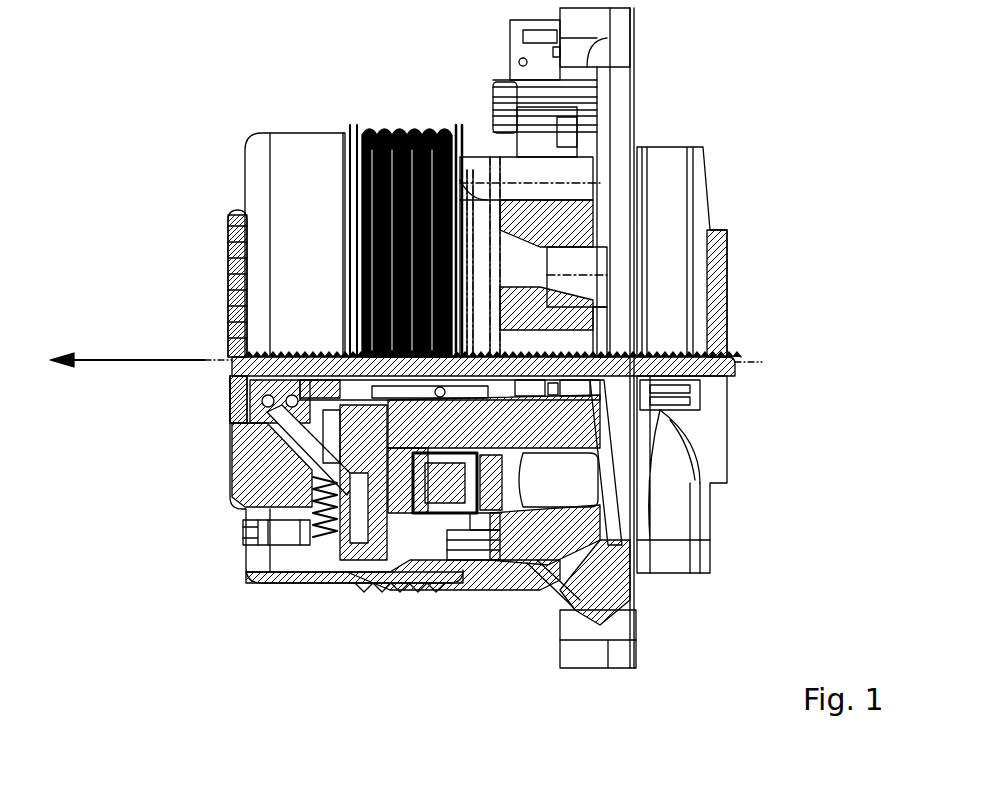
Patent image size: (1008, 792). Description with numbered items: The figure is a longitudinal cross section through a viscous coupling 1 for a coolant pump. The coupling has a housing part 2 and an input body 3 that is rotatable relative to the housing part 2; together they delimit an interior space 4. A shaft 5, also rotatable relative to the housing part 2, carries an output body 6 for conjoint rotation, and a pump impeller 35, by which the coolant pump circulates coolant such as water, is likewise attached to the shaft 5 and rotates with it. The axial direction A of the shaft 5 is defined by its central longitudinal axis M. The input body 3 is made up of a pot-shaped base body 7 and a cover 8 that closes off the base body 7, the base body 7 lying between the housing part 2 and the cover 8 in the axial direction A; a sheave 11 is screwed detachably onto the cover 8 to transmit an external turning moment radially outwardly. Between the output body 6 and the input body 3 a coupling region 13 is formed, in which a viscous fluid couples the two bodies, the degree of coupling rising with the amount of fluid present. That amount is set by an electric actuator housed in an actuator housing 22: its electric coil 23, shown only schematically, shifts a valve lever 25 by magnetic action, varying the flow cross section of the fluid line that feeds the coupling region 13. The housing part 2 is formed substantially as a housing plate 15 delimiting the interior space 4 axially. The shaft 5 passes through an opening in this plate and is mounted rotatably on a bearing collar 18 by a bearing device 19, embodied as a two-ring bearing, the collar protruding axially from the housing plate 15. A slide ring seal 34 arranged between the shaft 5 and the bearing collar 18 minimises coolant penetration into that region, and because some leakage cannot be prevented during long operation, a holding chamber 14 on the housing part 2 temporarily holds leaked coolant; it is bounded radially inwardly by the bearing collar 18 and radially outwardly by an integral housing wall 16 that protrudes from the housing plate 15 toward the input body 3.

The viscous coupling 1 is at (802, 131).
The housing part 2 is at (645, 625).
The input body 3 is at (222, 475).
The interior space 4 is at (265, 450).
The shaft 5 is at (738, 362).
The output body 6 is at (272, 565).
The pot-shaped base body 7 is at (372, 590).
The cover 8 is at (245, 490).
The sheave 11 is at (409, 128).
The coupling region 13 is at (318, 582).
The holding chamber 14 is at (566, 493).
The housing plate 15 is at (622, 598).
The housing wall 16 is at (530, 570).
The bearing collar 18 is at (500, 560).
The bearing device 19 is at (390, 578).
The actuator housing 22 is at (483, 570).
The electric coil 23 is at (458, 540).
The valve lever 25 is at (375, 575).
The slide ring seal 34 is at (618, 415).
The pump impeller 35 is at (678, 515).
The axial direction A is at (108, 356).
The central longitudinal axis M is at (228, 355).